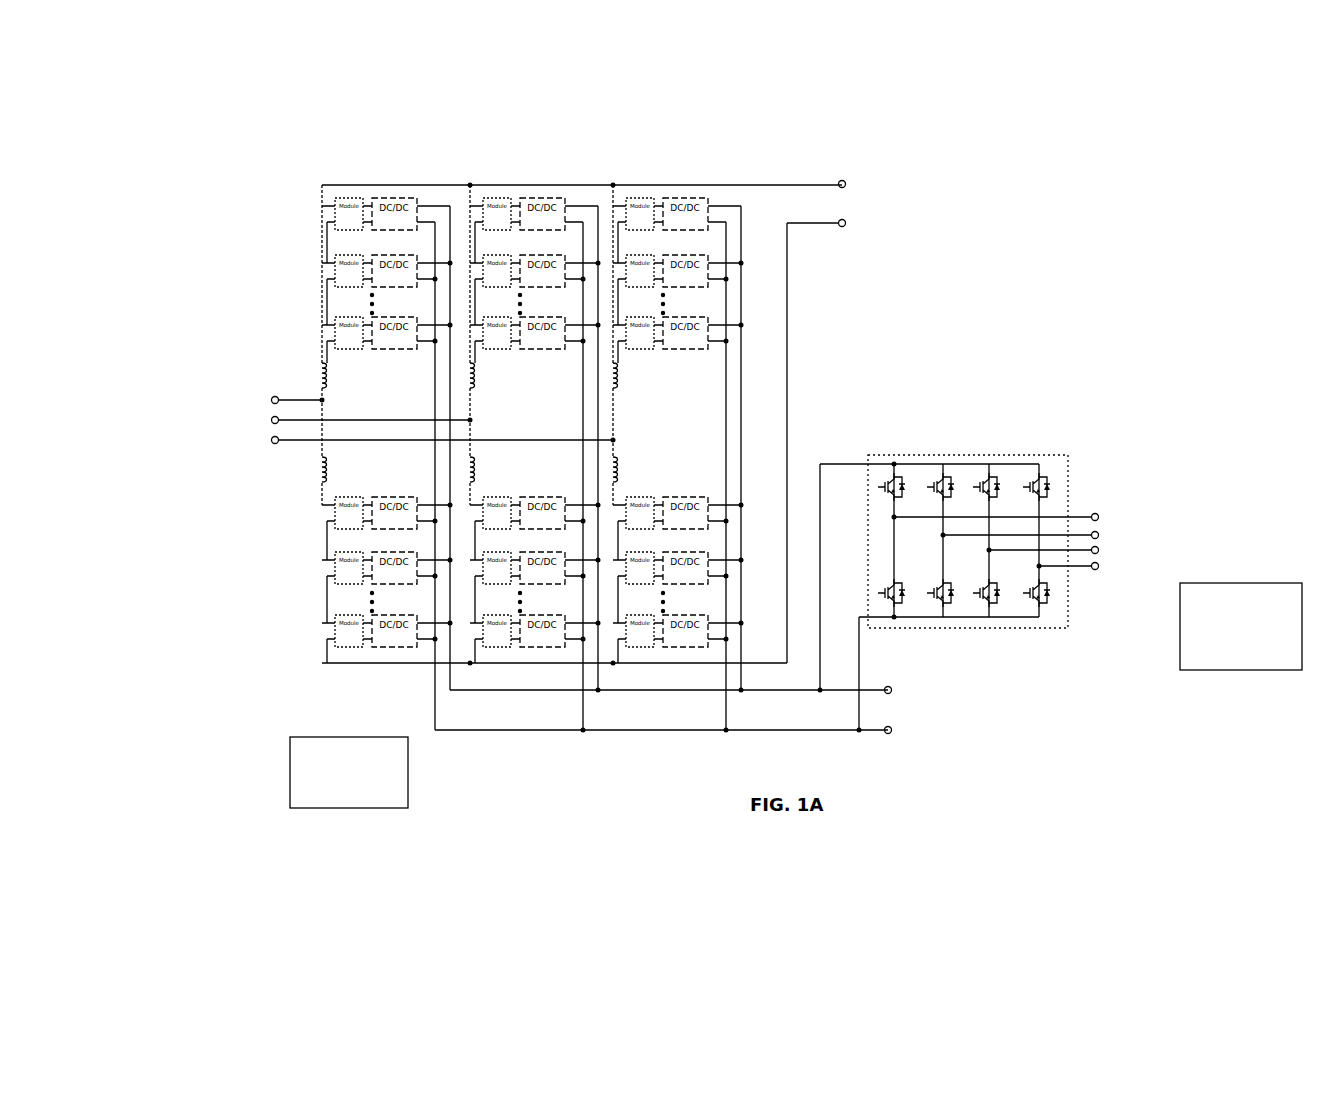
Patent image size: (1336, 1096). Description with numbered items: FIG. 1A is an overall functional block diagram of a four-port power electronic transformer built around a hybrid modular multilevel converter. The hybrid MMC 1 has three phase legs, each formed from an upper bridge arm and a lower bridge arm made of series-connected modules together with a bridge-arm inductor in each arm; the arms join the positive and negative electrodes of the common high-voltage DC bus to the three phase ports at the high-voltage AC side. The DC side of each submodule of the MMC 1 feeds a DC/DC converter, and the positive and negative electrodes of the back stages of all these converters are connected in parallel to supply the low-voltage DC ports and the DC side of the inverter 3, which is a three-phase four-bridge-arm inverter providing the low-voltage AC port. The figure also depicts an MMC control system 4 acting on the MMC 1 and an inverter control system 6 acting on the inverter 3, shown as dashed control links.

The hybrid MMC 1 is at (563, 172).
The inverter 3 is at (1035, 638).
The MMC control system 4 is at (348, 674).
The inverter control system 6 is at (1082, 620).